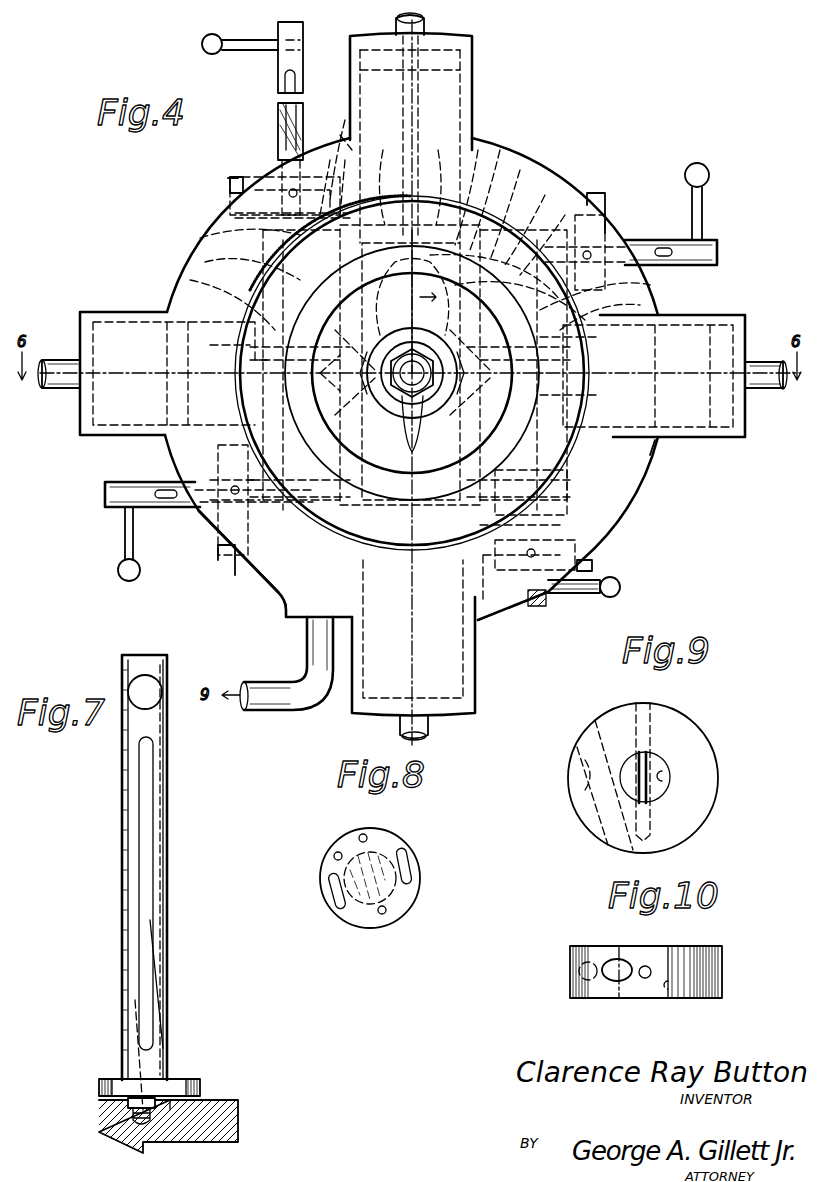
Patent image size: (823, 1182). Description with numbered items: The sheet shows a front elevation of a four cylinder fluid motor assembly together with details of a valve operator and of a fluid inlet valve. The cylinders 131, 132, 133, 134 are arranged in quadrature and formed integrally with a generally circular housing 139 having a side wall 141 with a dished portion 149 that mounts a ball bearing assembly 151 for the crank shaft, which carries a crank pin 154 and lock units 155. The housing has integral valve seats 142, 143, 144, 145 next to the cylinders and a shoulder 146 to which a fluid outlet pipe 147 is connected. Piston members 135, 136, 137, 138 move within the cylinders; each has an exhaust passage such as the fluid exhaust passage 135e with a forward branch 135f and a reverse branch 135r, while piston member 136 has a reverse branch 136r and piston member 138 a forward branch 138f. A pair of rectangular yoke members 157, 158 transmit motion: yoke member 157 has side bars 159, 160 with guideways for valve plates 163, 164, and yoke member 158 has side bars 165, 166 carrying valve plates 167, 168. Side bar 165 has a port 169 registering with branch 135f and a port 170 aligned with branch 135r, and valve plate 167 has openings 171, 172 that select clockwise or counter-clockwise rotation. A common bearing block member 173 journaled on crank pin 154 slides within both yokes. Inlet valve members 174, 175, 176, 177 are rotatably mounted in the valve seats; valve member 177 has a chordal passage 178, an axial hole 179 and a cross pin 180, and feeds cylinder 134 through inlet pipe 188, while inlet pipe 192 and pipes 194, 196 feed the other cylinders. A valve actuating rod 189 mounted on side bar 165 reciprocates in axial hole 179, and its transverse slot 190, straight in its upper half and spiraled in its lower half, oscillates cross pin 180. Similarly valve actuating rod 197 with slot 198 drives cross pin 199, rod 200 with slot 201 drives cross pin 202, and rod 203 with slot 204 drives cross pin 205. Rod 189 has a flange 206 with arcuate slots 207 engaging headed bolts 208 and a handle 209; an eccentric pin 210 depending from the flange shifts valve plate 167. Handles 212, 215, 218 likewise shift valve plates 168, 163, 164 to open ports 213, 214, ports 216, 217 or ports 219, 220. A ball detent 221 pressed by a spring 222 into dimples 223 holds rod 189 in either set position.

In FIG. 4, the cylinder 131 is at (478, 56).
In FIG. 4, the cylinder 132 is at (705, 440).
In FIG. 4, the cylinder 133 is at (350, 690).
In FIG. 4, the cylinder 134 is at (126, 310).
In FIG. 4, the piston member 135 is at (470, 82).
In FIG. 4, the fluid exhaust passage 135e is at (400, 110).
In FIG. 4, the fluid exhaust branch 135r is at (390, 175).
In FIG. 4, the fluid exhaust branch 135f is at (432, 175).
In FIG. 4, the piston member 136 is at (650, 455).
In FIG. 4, the fluid exhaust branch 136r is at (585, 395).
In FIG. 4, the piston member 137 is at (280, 596).
In FIG. 4, the piston member 138 is at (182, 270).
In FIG. 4, the fluid exhaust branch 138f is at (250, 345).
In FIG. 4, the generally circular housing 139 is at (545, 165).
In FIG. 4, the side wall 141 is at (575, 168).
In FIG. 4, the valve seat 142 is at (606, 193).
In FIG. 4, the valve seat 143 is at (596, 560).
In FIG. 4, the valve seat 144 is at (226, 560).
In FIG. 4, the valve seat 145 is at (228, 187).
In FIG. 4, the shoulder 146 is at (284, 612).
In FIG. 4, the fluid outlet pipe 147 is at (306, 658).
In FIG. 4, the dished portion 149 is at (555, 455).
In FIG. 4, the ball bearing assembly 151 is at (200, 255).
In FIG. 4, the crank pin 154 is at (520, 140).
In FIG. 4, the lock units 155 is at (416, 445).
In FIG. 4, the yoke member 157 is at (545, 500).
In FIG. 4, the yoke member 158 is at (200, 235).
In FIG. 4, the side bar 159 is at (470, 440).
In FIG. 4, the side bar 160 is at (320, 460).
In FIG. 4, the valve plate 163 is at (648, 285).
In FIG. 4, the valve plate 164 is at (318, 436).
In FIG. 4, the side bar 165 is at (560, 185).
In FIG. 4, the side bar 166 is at (656, 302).
In FIG. 4, the valve plate 167 is at (340, 170).
In FIG. 4, the valve plate 168 is at (590, 350).
In FIG. 4, the port 169 is at (488, 140).
In FIG. 4, the port 170 is at (350, 112).
In FIG. 4, the opening 171 is at (482, 118).
In FIG. 4, the opening 172 is at (352, 140).
In FIG. 4, the bearing block member 173 is at (530, 160).
In FIG. 4, the inlet valve member 174 is at (606, 212).
In FIG. 4, the inlet valve member 175 is at (595, 565).
In FIG. 4, the inlet valve member 176 is at (218, 540).
In FIG. 4, the inlet valve member 177 is at (262, 170).
In FIG. 9, the inlet valve member 177 is at (690, 828).
In FIG. 10, the inlet valve member 177 is at (706, 948).
In FIG. 9, the chordal passage 178 is at (580, 790).
In FIG. 10, the chordal passage 178 is at (612, 962).
In FIG. 9, the axial hole 179 is at (668, 776).
In FIG. 10, the axial hole 179 is at (674, 998).
In FIG. 9, the cross pin 180 is at (648, 768).
In FIG. 10, the cross pin 180 is at (643, 980).
In FIG. 4, the inlet pipe 188 is at (58, 358).
In FIG. 4, the valve actuating rod 189 is at (278, 128).
In FIG. 7, the valve actuating rod 189 is at (122, 783).
In FIG. 4, the transverse slot 190 is at (278, 108).
In FIG. 7, the transverse slot 190 is at (143, 850).
In FIG. 4, the inlet pipe 192 is at (393, 30).
In FIG. 4, the pipe 194 is at (760, 392).
In FIG. 4, the pipe 196 is at (430, 730).
In FIG. 4, the valve actuating rod 197 is at (712, 238).
In FIG. 4, the slot 198 is at (665, 248).
In FIG. 4, the cross pin 199 is at (612, 240).
In FIG. 4, the valve actuating rod 200 is at (538, 608).
In FIG. 4, the slot 201 is at (548, 522).
In FIG. 4, the cross pin 202 is at (548, 597).
In FIG. 4, the valve actuating rod 203 is at (110, 480).
In FIG. 4, the slot 204 is at (163, 488).
In FIG. 4, the cross pin 205 is at (212, 512).
In FIG. 4, the flange 206 is at (235, 215).
In FIG. 7, the flange 206 is at (99, 1088).
In FIG. 8, the flange 206 is at (358, 837).
In FIG. 7, the arcuate slots 207 is at (105, 1078).
In FIG. 8, the arcuate slots 207 is at (406, 856).
In FIG. 4, the headed bolts 208 is at (228, 178).
In FIG. 4, the handle 209 is at (245, 50).
In FIG. 7, the handle 209 is at (162, 689).
In FIG. 4, the eccentric pin 210 is at (298, 245).
In FIG. 7, the eccentric pin 210 is at (172, 1112).
In FIG. 8, the eccentric pin 210 is at (382, 916).
In FIG. 4, the handle 212 is at (618, 596).
In FIG. 4, the port 213 is at (405, 345).
In FIG. 4, the port 214 is at (422, 345).
In FIG. 4, the handle 215 is at (712, 182).
In FIG. 4, the port 216 is at (447, 410).
In FIG. 4, the port 217 is at (436, 296).
In FIG. 4, the handle 218 is at (124, 535).
In FIG. 4, the port 219 is at (288, 262).
In FIG. 4, the port 220 is at (370, 420).
In FIG. 7, the ball detent 221 is at (128, 1110).
In FIG. 7, the spring 222 is at (105, 1135).
In FIG. 7, the dimples 223 is at (130, 1050).
In FIG. 8, the dimples 223 is at (334, 856).